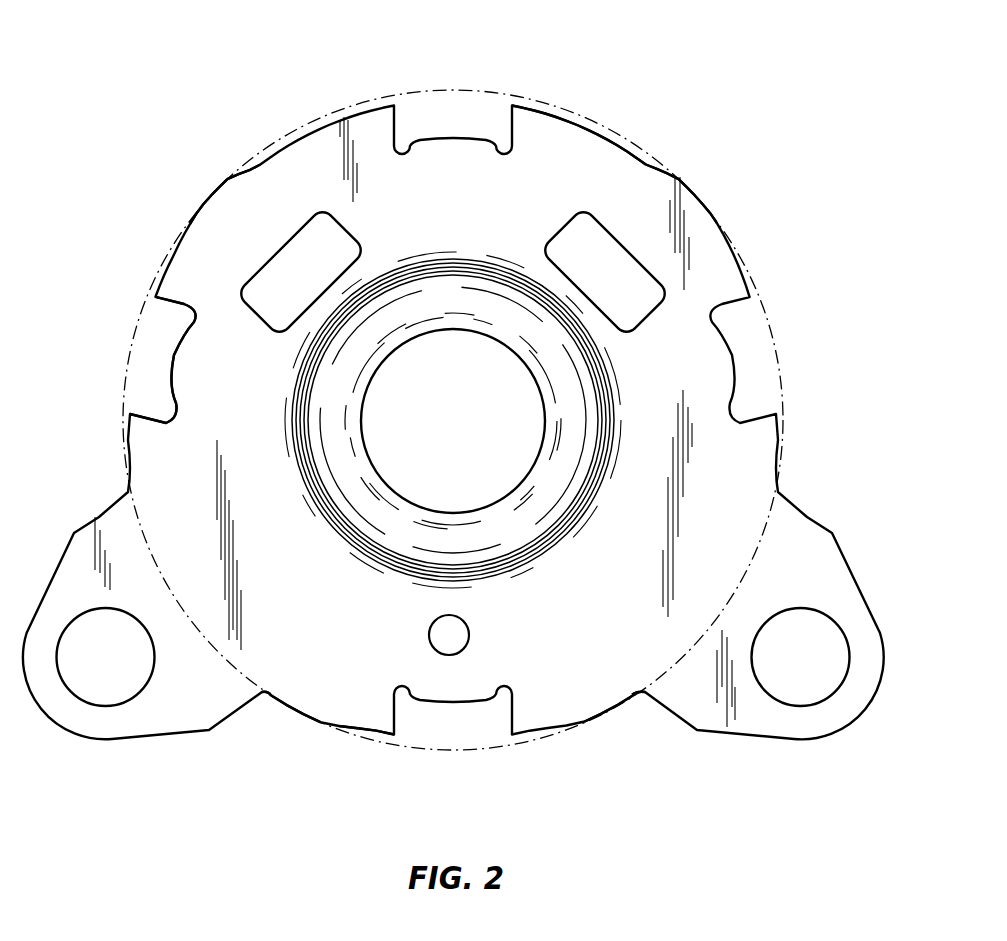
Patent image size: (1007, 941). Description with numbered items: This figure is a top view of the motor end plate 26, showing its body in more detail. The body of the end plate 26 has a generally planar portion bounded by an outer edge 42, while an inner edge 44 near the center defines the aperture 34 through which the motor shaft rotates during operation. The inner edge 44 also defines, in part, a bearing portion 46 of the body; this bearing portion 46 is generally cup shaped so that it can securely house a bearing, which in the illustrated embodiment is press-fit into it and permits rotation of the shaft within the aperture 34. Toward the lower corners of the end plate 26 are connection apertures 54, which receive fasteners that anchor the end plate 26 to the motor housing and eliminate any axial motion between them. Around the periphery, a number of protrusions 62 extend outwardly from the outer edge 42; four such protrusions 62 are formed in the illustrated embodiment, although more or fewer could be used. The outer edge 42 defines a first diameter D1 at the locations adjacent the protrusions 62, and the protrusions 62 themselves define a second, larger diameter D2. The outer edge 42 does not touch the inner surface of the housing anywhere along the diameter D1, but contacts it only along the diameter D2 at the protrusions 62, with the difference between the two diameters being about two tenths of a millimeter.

The motor end plate 26 is at (626, 92).
The aperture 34 is at (443, 332).
The outer edge 42 is at (152, 272).
The inner edge 44 is at (362, 418).
The bearing portion 46 is at (498, 530).
The connection apertures 54 is at (100, 686).
The protrusions 62 is at (216, 188).
The first diameter D1 is at (532, 94).
The second diameter D2 is at (372, 97).